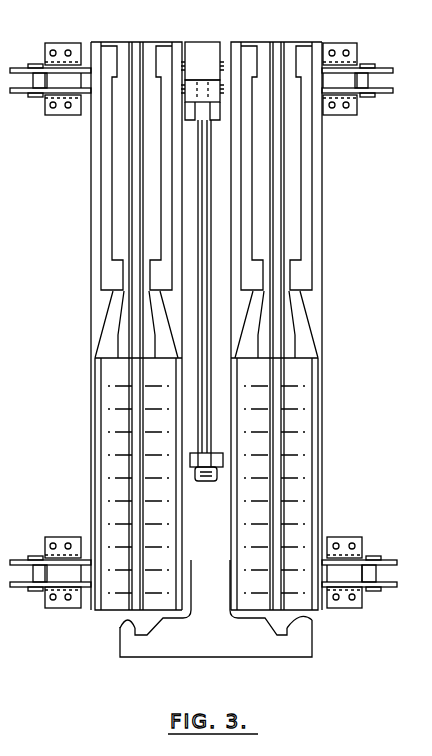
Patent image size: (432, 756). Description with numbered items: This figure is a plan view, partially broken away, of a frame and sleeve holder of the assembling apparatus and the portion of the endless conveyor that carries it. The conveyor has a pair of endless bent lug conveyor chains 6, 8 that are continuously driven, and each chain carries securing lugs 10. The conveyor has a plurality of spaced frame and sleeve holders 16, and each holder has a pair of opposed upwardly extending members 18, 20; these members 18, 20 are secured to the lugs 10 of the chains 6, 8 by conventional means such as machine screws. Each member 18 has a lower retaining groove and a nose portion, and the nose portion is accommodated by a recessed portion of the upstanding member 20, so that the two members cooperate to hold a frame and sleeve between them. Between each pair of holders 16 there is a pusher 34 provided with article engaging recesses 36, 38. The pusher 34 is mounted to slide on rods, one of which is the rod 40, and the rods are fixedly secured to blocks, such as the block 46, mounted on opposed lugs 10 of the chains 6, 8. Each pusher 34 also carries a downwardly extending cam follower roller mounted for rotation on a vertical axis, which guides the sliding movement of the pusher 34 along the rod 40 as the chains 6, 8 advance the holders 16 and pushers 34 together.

The bent lug conveyor chain 6 is at (392, 560).
The bent lug conveyor chain 8 is at (388, 68).
The securing lug 10 is at (345, 44).
The frame and sleeve holder 16 is at (209, 326).
The upwardly extending member 18 is at (80, 440).
The upwardly extending member 20 is at (318, 372).
The pusher 34 is at (214, 608).
The article engaging recess 36 is at (118, 626).
The article engaging recess 38 is at (313, 622).
The rod 40 is at (213, 243).
The block 46 is at (209, 55).